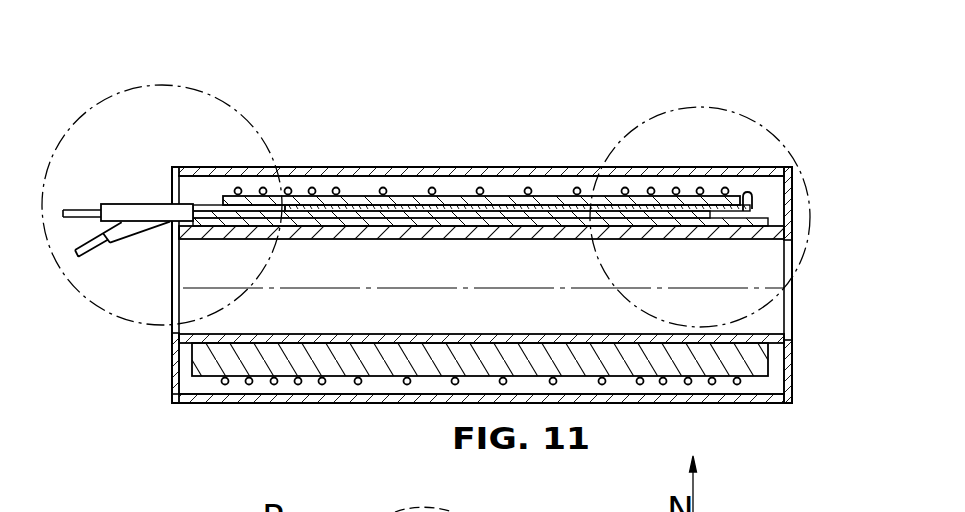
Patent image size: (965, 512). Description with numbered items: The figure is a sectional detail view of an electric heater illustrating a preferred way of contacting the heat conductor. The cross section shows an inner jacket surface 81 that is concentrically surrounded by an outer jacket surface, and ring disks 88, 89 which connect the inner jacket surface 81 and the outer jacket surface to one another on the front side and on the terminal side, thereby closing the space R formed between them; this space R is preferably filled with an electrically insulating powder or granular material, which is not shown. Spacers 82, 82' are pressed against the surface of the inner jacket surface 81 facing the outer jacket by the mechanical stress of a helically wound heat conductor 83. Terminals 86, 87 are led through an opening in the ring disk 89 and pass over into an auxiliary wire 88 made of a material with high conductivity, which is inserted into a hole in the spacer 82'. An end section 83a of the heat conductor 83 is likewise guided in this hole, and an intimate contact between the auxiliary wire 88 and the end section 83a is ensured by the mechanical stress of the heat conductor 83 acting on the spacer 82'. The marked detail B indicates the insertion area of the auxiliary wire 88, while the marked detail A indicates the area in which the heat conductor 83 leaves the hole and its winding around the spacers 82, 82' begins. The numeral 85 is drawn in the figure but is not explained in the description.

The inner jacket surface 81 is at (172, 351).
The spacer 82 is at (504, 416).
The spacer 82' is at (481, 117).
The heat conductor 83 is at (335, 192).
The end section of the heat conductor 83a is at (550, 213).
The top cover wall 85 is at (397, 167).
The terminal 86 is at (122, 203).
The terminal 87 is at (120, 238).
The auxiliary wire 88 is at (207, 213).
The ring disk 89 is at (170, 394).
The space R is at (203, 384).
The enlarged detail area A is at (730, 123).
The enlarged detail area B is at (138, 100).